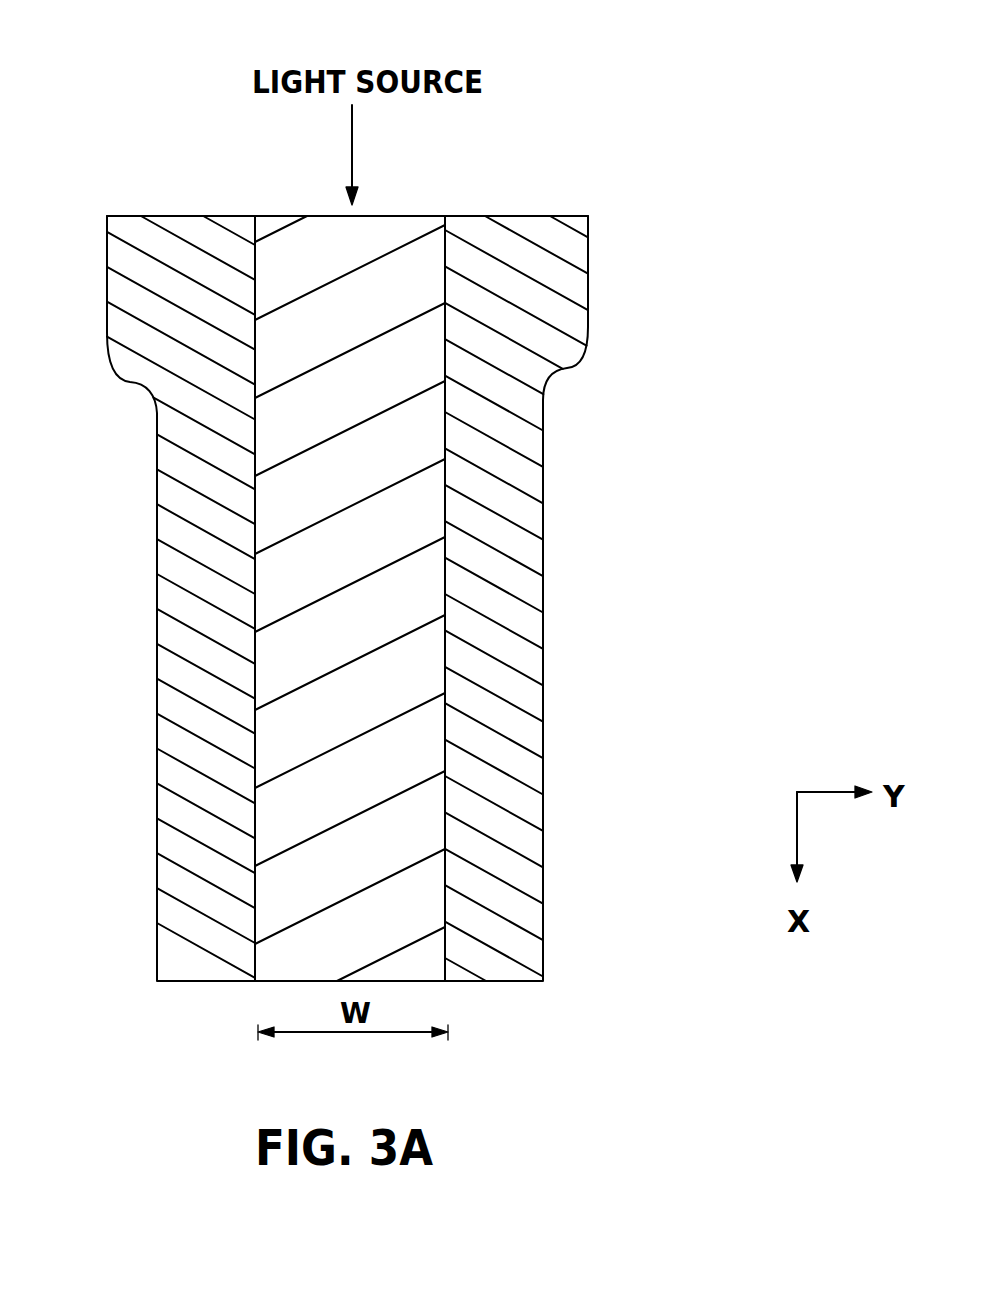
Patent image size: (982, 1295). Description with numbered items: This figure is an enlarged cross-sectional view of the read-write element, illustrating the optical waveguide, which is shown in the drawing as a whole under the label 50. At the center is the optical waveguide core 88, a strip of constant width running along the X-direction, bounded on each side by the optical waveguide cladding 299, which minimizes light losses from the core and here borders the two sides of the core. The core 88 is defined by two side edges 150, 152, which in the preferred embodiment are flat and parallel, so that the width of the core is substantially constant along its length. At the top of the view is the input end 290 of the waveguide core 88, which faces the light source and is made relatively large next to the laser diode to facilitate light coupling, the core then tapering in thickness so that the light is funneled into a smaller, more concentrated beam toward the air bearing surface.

The optical waveguide device 50 is at (373, 27).
The input end 290 is at (410, 215).
The optical waveguide cladding 299 is at (527, 515).
The optical waveguide core 88 is at (263, 575).
The side edge 150 is at (267, 717).
The side edge 152 is at (445, 658).